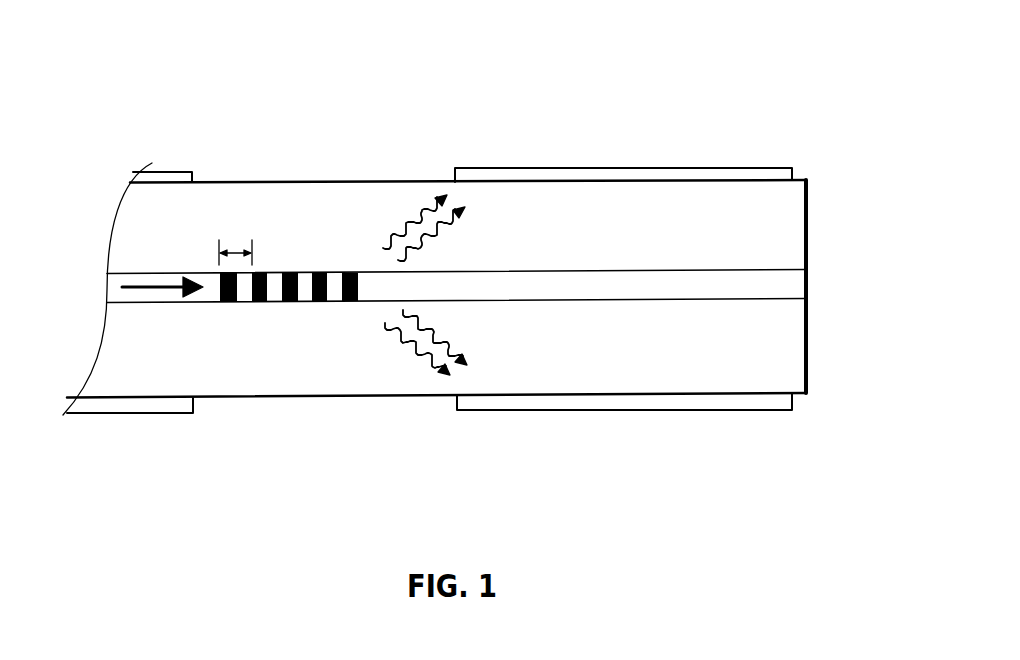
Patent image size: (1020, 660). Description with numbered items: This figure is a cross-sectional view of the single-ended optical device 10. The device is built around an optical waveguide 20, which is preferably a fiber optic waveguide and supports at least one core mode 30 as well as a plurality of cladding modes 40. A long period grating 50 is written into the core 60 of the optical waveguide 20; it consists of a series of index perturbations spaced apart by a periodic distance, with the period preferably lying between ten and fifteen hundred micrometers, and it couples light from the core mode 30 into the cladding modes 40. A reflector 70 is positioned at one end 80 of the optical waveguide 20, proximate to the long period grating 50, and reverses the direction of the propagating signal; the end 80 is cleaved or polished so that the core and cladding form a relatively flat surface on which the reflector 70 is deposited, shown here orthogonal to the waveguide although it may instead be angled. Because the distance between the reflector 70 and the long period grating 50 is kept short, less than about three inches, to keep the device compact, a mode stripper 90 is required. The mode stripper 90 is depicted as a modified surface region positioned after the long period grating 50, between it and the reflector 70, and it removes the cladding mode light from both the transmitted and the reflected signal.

The single-ended optical device 10 is at (471, 217).
The optical waveguide 20 is at (102, 287).
The core mode 30 is at (160, 284).
The cladding modes 40 is at (413, 220).
The long period grating 50 is at (358, 310).
The core 60 is at (795, 292).
The reflector 70 is at (808, 215).
The end of the optical waveguide 80 is at (792, 348).
The mode stripper 90 is at (640, 172).